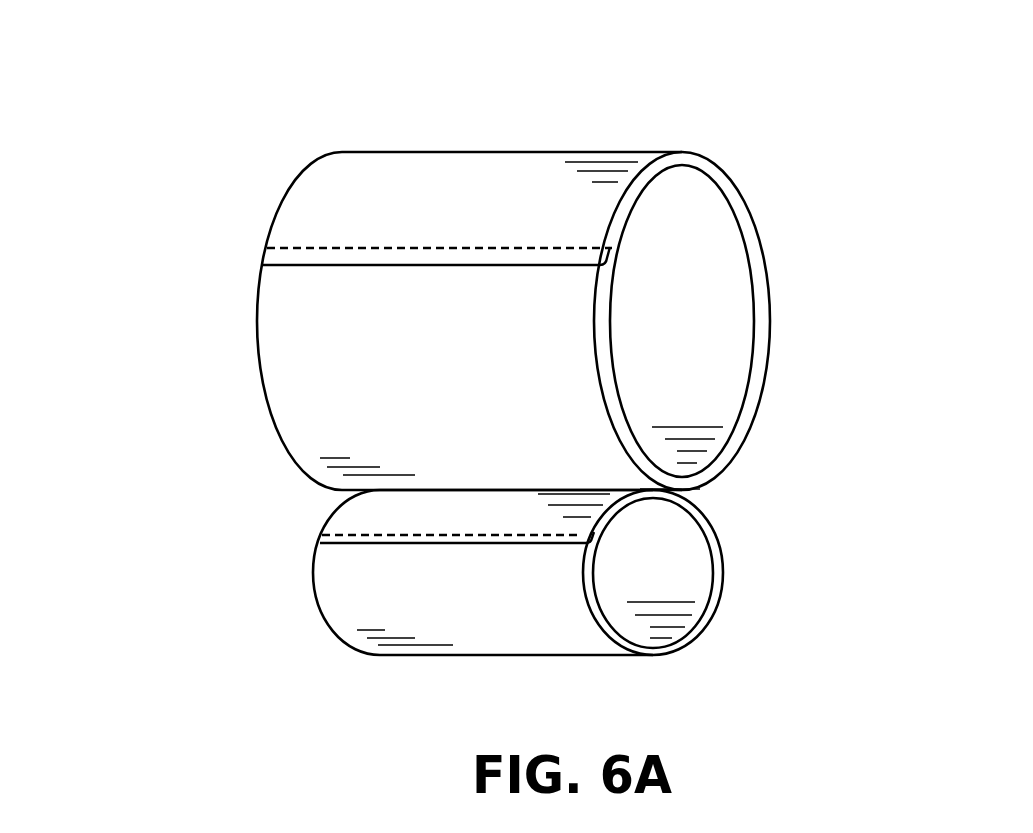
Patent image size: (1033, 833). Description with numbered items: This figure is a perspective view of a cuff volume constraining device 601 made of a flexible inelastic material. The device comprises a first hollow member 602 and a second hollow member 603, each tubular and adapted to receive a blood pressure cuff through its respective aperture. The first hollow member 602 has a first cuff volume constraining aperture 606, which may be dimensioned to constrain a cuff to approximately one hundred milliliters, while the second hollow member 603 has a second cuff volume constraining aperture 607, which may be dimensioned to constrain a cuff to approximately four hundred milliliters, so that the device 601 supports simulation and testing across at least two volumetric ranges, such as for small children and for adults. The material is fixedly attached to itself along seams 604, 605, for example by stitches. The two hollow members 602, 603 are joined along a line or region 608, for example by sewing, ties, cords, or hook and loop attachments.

The cuff volume constraining device 601 is at (212, 142).
The first hollow member 602 is at (265, 382).
The second hollow member 603 is at (330, 623).
The seam 604 is at (240, 235).
The seam 605 is at (286, 535).
The first cuff volume constraining aperture 606 is at (708, 276).
The second cuff volume constraining aperture 607 is at (680, 563).
The line or region 608 is at (715, 495).